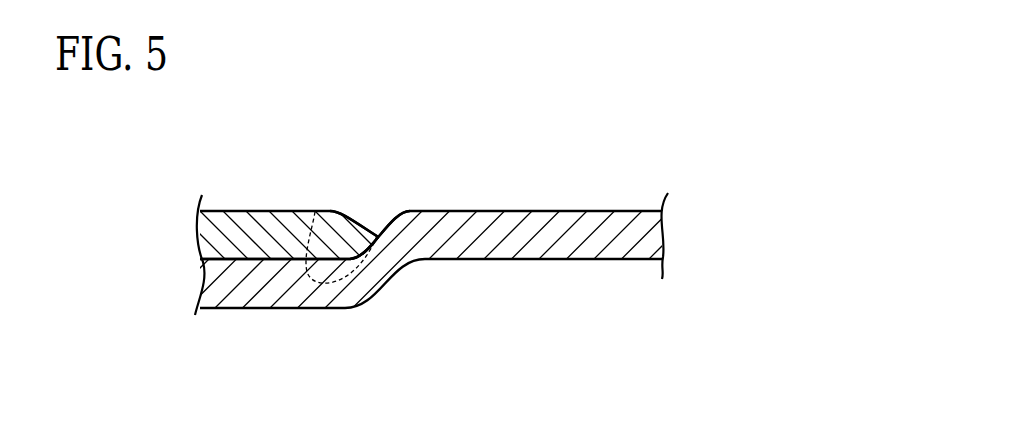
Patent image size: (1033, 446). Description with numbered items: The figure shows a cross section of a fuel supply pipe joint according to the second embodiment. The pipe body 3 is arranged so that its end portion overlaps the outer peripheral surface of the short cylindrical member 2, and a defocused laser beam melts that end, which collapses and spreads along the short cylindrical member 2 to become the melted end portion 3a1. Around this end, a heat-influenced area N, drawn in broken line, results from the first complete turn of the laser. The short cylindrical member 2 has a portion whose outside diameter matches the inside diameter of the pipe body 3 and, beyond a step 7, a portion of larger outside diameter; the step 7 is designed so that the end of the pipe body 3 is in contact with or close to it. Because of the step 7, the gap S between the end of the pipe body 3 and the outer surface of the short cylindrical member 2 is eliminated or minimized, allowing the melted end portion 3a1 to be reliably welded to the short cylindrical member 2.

The short cylindrical member 2 is at (533, 259).
The pipe body 3 is at (262, 211).
The melted end portion 3a1 is at (373, 229).
The step 7 is at (385, 226).
The gap S is at (384, 226).
The heat-influenced area N is at (336, 288).